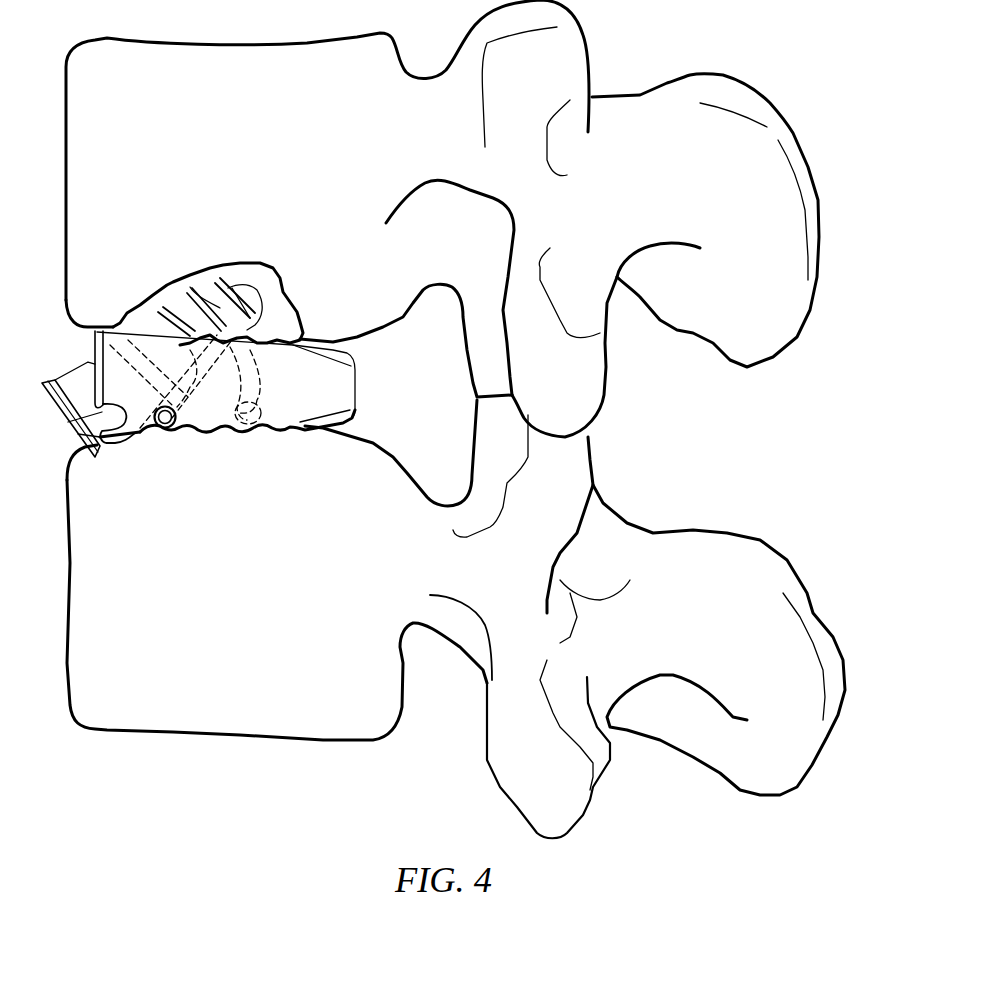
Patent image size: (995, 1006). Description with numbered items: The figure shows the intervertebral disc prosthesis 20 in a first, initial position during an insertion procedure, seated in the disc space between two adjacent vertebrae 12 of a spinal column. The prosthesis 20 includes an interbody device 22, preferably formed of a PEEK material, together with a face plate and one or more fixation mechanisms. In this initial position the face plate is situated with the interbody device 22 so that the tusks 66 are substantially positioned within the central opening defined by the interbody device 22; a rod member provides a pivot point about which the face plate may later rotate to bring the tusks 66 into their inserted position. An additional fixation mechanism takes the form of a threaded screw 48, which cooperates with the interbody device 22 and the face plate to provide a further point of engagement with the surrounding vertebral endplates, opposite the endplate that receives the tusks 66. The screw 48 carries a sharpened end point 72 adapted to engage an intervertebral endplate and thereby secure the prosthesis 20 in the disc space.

The vertebrae 12 is at (254, 142).
The intervertebral disc prosthesis 20 is at (378, 379).
The interbody device 22 is at (335, 428).
The threaded screw 48 is at (82, 376).
The tusks 66 is at (250, 367).
The sharpened end point 72 is at (262, 290).